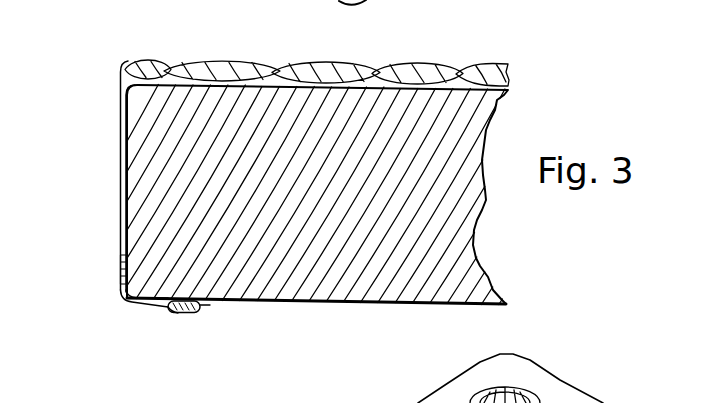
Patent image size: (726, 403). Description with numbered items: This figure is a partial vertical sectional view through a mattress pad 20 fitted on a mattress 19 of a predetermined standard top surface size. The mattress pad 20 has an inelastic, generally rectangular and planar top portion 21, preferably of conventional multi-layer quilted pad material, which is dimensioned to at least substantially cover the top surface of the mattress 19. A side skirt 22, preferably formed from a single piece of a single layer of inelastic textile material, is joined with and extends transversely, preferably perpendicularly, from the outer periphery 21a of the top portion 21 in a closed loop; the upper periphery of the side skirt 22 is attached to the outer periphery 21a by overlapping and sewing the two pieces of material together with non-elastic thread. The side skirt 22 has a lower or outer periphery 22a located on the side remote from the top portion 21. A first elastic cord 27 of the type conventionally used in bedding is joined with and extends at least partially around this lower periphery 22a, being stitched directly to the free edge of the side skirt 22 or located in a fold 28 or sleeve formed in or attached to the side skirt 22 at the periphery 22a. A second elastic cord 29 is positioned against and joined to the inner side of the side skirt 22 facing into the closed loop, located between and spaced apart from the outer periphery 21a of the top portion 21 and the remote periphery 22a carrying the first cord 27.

The mattress 19 is at (463, 228).
The mattress pad 20 is at (203, 57).
The top portion 21 is at (388, 76).
The outer periphery of the top portion 21a is at (118, 69).
The side skirt 22 is at (118, 200).
The lower periphery of the side skirt 22a is at (200, 307).
The first elastic cord 27 is at (175, 313).
The fold 28 is at (187, 315).
The second elastic cord 29 is at (120, 268).